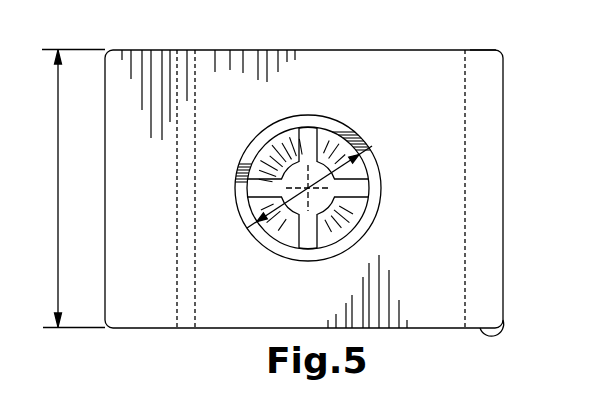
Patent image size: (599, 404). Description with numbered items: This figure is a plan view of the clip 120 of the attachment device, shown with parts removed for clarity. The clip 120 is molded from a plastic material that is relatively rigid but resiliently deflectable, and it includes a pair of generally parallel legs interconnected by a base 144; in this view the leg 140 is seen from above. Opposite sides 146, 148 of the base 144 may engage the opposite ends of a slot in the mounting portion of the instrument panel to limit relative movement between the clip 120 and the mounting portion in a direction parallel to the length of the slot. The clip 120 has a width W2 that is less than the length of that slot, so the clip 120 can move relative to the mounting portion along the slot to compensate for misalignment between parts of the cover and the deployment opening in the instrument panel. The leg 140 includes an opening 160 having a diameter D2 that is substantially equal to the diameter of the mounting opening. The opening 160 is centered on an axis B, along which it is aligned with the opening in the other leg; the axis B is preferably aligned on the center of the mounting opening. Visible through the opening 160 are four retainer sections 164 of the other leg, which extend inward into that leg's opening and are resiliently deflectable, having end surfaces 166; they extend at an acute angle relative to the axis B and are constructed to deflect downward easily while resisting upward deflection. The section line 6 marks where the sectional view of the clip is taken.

The clip 120 is at (181, 336).
The leg 140 is at (365, 70).
The base 144 is at (470, 258).
The side of base 146 is at (480, 50).
The side of base 148 is at (478, 331).
The opening 160 is at (250, 138).
The retainer sections 164 is at (346, 128).
The end surfaces 166 is at (297, 160).
The width of clip W2 is at (57, 206).
The diameter of opening D2 is at (256, 224).
The axis B is at (308, 188).
The section line 6- 6 is at (120, 188).